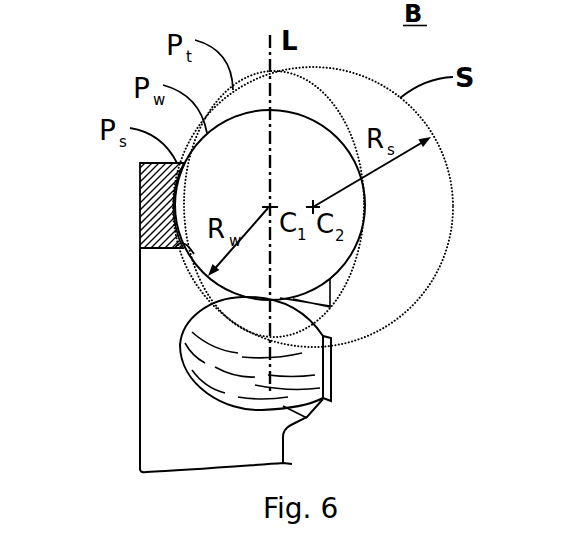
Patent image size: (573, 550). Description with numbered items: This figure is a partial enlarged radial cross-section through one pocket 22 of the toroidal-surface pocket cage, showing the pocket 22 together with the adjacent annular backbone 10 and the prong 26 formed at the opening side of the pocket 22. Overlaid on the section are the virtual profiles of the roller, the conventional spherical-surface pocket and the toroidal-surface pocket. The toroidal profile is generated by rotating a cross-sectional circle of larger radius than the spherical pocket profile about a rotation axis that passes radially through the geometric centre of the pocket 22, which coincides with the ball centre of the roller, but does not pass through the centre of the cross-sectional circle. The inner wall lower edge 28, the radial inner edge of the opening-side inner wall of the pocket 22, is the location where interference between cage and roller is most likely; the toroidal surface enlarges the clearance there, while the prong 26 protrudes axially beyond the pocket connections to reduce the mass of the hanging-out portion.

The backbone 10 is at (152, 193).
The pocket 22 is at (250, 388).
The prong 26 is at (332, 347).
The inner wall lower edge 28 is at (194, 256).